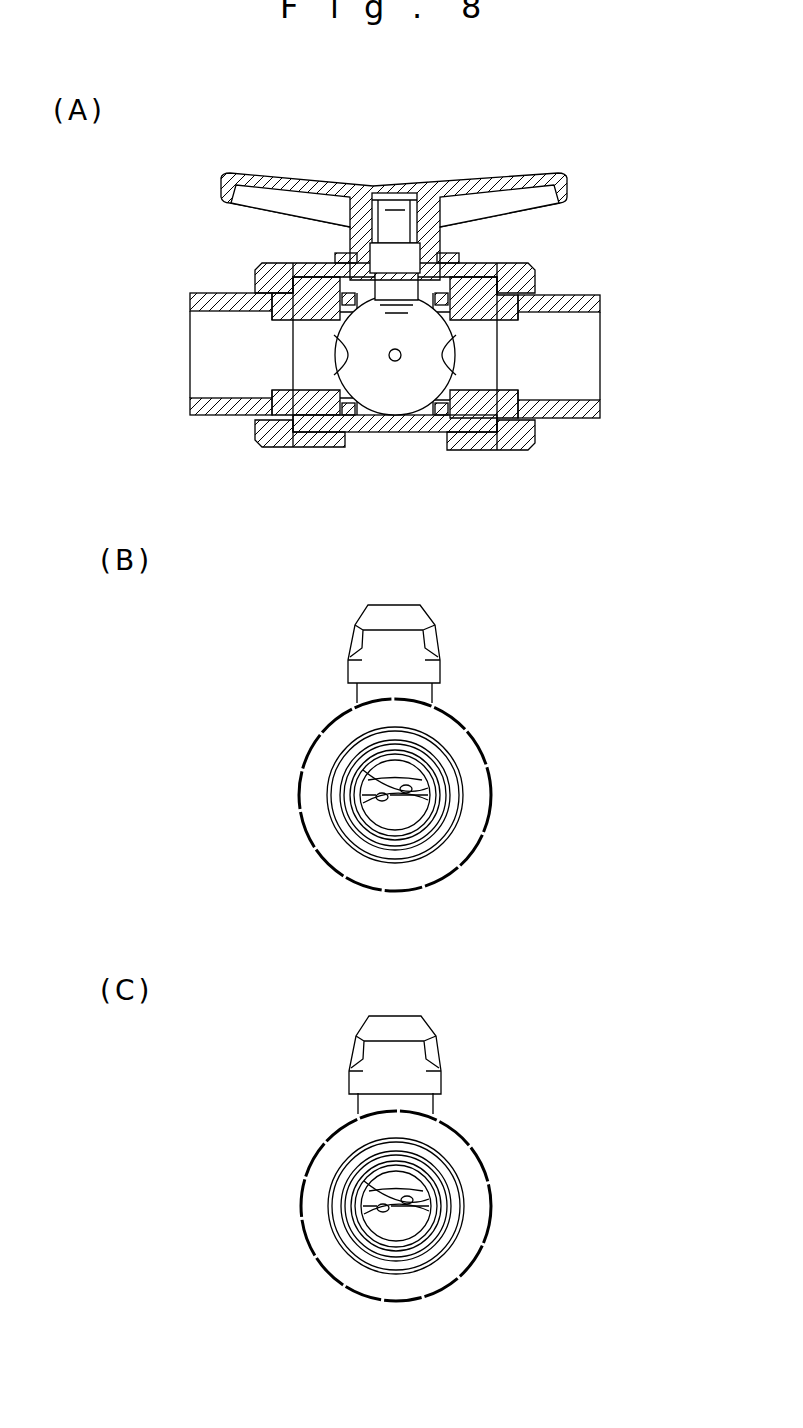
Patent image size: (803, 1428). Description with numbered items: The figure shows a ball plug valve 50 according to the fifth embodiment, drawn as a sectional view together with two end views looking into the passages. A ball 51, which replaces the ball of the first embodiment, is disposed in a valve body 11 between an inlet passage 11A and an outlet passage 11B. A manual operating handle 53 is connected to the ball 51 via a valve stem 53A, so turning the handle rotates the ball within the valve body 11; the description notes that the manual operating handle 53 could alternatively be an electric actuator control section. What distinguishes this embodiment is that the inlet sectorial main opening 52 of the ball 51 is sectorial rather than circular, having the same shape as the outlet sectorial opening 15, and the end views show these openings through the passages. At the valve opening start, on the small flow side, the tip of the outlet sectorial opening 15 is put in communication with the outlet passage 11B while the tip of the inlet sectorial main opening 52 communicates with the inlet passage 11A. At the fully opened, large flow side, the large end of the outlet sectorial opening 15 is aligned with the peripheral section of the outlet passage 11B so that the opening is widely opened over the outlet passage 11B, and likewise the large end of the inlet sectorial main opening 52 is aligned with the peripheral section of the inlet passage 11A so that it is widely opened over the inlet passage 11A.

The ball plug valve 50 is at (213, 183).
The manual operating handle 53 is at (567, 190).
The valve stem 53A is at (403, 258).
The valve body 11 is at (373, 440).
The inlet passage 11A is at (200, 350).
The outlet passage 11B is at (590, 355).
The ball 51 is at (395, 387).
The inlet sectorial main opening 52 is at (380, 805).
The outlet sectorial opening 15 is at (400, 793).